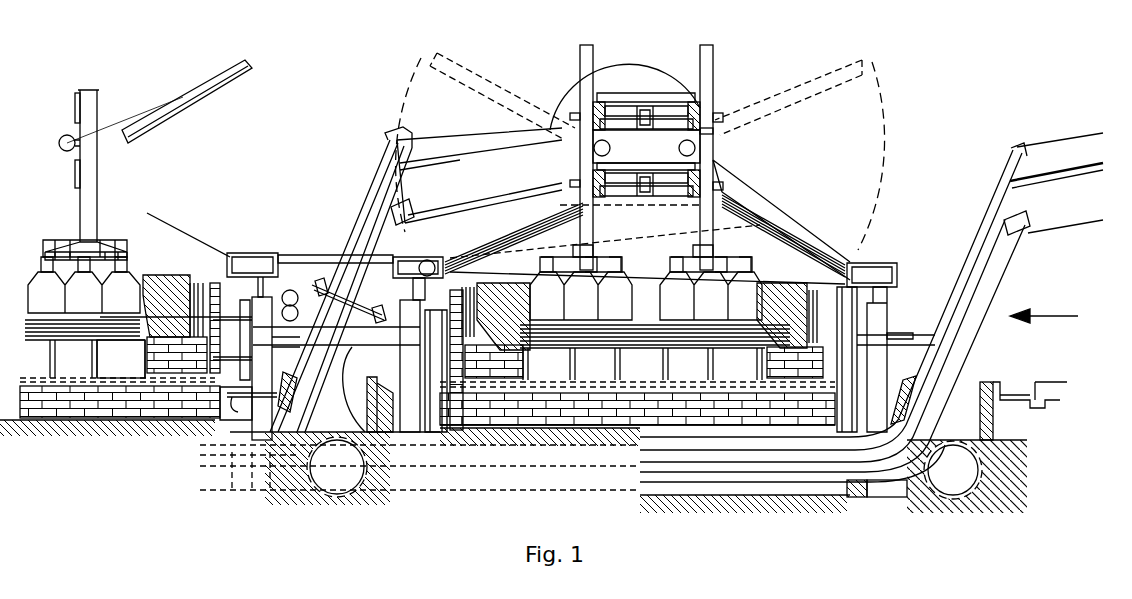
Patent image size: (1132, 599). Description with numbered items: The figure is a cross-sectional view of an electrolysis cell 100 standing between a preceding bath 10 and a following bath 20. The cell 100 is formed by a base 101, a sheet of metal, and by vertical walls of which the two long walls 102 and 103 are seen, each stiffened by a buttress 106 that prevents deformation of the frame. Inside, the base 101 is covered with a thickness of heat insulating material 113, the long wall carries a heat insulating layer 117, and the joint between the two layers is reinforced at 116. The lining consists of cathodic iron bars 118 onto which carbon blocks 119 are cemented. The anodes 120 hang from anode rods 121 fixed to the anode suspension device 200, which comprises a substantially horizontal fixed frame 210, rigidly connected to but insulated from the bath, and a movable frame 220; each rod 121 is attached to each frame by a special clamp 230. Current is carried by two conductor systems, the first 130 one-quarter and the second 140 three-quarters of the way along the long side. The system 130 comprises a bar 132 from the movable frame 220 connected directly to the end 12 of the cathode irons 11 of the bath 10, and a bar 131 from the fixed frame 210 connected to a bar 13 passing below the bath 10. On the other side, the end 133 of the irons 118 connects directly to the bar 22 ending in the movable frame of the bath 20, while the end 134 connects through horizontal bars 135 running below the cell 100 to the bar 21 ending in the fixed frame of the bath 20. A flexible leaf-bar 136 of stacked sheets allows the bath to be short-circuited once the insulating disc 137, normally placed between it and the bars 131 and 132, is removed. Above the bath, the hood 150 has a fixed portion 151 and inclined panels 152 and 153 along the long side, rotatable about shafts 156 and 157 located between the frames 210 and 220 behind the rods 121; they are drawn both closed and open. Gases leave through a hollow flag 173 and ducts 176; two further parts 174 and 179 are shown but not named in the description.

The preceding bath 10 is at (126, 248).
The cathode irons 11 is at (122, 378).
The end of the cathode irons 12 is at (248, 400).
The bar 13 is at (203, 458).
The following bath 20 is at (1056, 198).
The bar 21 is at (977, 333).
The bar 22 is at (983, 233).
The cell 100 is at (898, 213).
The base 101 is at (741, 428).
The vertical wall 102 is at (431, 355).
The vertical wall 103 is at (843, 340).
The buttress 106 is at (295, 378).
The heat insulating material 113 is at (676, 421).
The reinforced joint 116 is at (527, 366).
The heat insulating layer 117 is at (490, 300).
The cathodic iron bars 118 is at (588, 383).
The carbon blocks 119 is at (682, 378).
The anodes 120 is at (737, 300).
The anode rods 121 is at (716, 218).
The system of conductors 130 is at (350, 217).
The bar 131 is at (417, 207).
The bar 132 is at (403, 143).
The end of the irons 133 is at (870, 392).
The end of the irons 134 is at (393, 410).
The horizontal bars 135 is at (797, 477).
The leaf-bar 136 is at (362, 371).
The insulating disc 137 is at (372, 293).
The system of conductors 140 is at (1063, 317).
The hood 150 is at (862, 143).
The fixed portion 151 is at (630, 198).
The movable portion 152 is at (500, 87).
The movable portion 153 is at (800, 95).
The shaft 156 is at (578, 122).
The shaft 157 is at (708, 137).
The flag 173 is at (425, 257).
The roller 174 is at (873, 273).
The ducts 176 is at (327, 470).
The frame plate 179 is at (685, 235).
The anode suspension device 200 is at (663, 165).
The fixed frame 210 is at (717, 180).
The movable frame 220 is at (693, 93).
The special clamp 230 is at (720, 112).